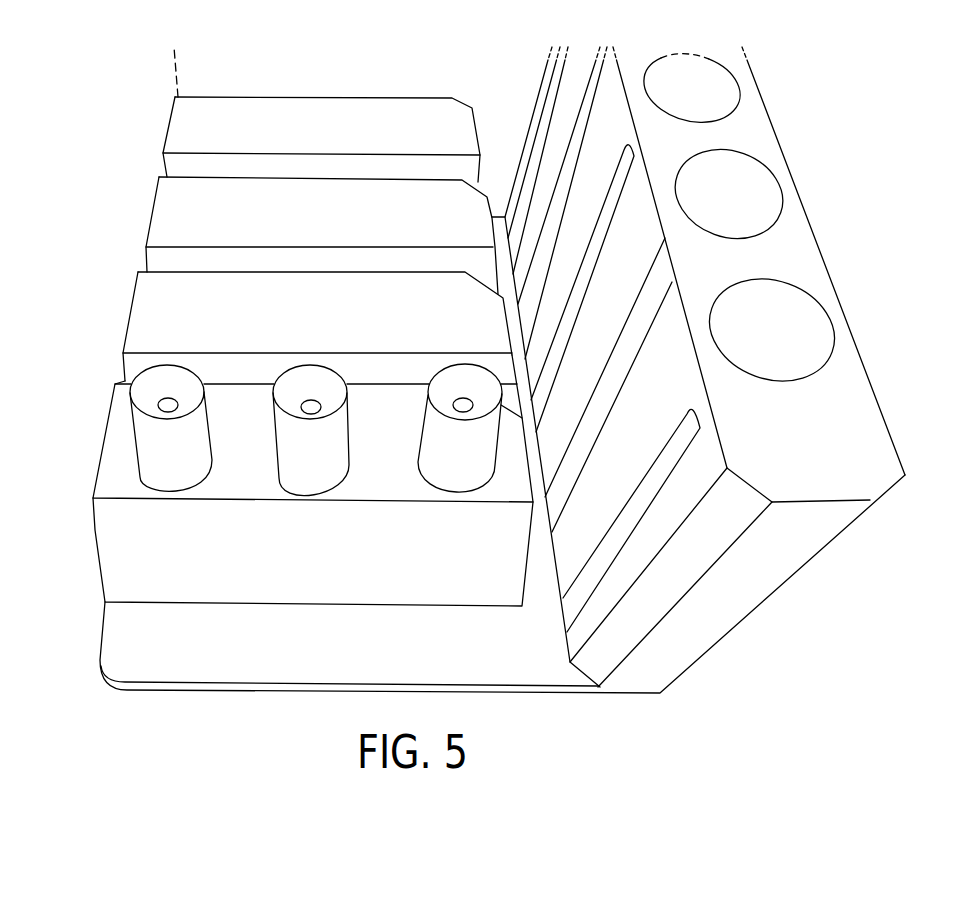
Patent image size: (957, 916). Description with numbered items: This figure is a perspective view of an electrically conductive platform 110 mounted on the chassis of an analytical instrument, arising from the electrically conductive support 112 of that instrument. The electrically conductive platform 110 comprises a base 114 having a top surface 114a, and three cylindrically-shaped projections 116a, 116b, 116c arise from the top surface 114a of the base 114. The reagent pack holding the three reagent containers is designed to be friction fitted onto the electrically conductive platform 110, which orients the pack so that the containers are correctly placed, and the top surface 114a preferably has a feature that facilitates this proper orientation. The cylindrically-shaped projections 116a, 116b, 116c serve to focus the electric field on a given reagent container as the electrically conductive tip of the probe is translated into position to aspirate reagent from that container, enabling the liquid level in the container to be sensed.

The electrically conductive platform 110 is at (81, 558).
The electrically conductive support 112 is at (170, 662).
The base 114 is at (230, 590).
The top surface 114a is at (105, 480).
The cylindrically-shaped projection 116a is at (138, 422).
The cylindrically-shaped projection 116b is at (280, 427).
The cylindrically-shaped projection 116c is at (428, 427).